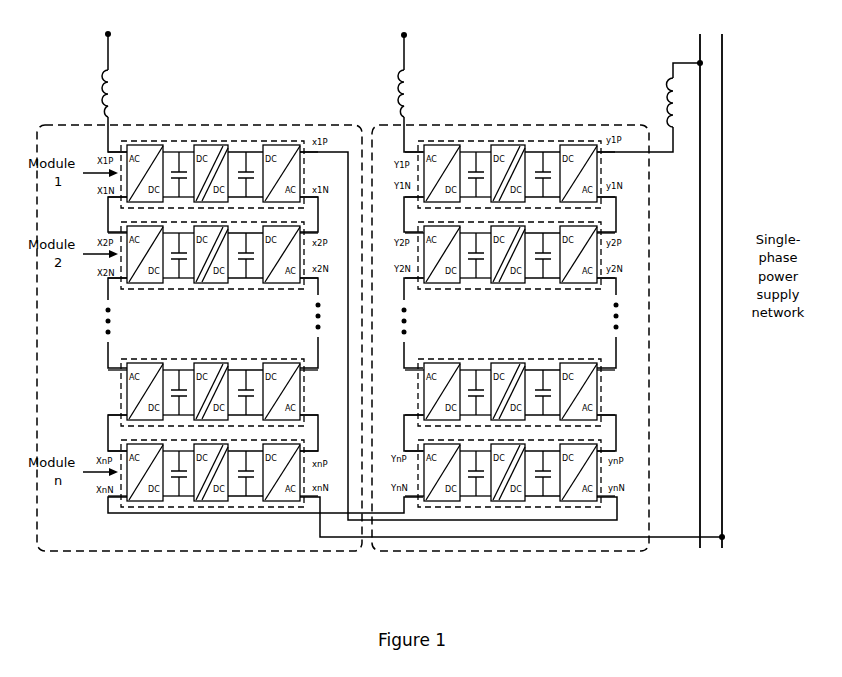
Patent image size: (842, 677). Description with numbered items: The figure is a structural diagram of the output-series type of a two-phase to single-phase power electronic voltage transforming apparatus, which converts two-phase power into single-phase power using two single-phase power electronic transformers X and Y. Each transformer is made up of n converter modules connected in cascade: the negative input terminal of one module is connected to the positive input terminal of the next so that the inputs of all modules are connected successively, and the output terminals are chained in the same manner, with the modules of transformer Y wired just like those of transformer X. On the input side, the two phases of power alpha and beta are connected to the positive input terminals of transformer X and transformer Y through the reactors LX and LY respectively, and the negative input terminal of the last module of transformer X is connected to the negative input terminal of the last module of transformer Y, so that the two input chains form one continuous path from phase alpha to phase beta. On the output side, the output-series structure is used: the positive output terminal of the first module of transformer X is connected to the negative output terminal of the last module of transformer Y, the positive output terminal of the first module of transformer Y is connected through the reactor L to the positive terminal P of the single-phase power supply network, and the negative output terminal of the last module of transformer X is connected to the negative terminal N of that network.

The phase α power alpha is at (96, 43).
The phase β power beta is at (390, 44).
The reactor LX is at (116, 93).
The reactor LY is at (411, 93).
The reactor L is at (659, 102).
The positive terminal of the single-phase power supply network P is at (693, 291).
The negative terminal of the single-phase power supply network N is at (731, 291).
The single-phase power electronic transformer X is at (183, 562).
The single-phase power electronic transformer Y is at (509, 562).